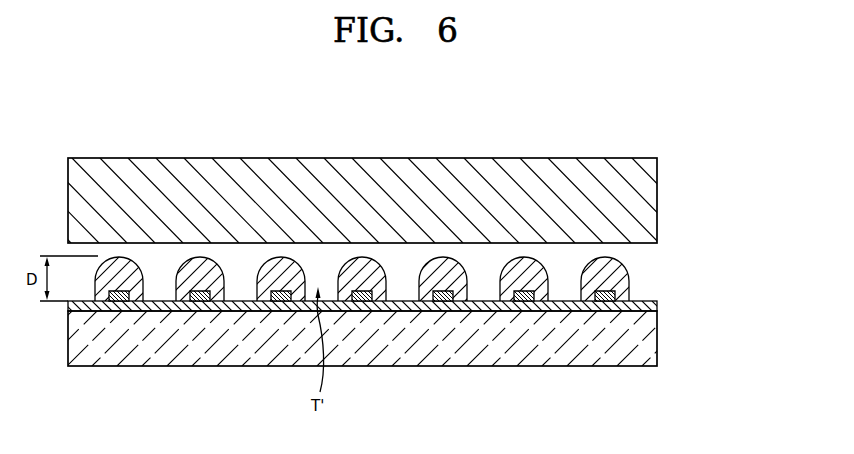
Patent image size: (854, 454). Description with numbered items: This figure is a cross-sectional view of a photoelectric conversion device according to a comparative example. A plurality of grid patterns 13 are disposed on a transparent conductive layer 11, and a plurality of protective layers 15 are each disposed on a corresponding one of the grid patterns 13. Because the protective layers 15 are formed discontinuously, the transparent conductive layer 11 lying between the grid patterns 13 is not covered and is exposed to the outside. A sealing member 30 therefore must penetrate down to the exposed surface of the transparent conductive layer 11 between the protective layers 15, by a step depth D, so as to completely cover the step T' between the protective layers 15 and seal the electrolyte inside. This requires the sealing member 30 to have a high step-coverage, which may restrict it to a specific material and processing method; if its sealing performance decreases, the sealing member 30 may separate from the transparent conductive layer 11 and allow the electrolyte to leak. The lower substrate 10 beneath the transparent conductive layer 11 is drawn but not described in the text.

The substrate 10 is at (650, 339).
The transparent conductive layer 11 is at (650, 309).
The grid patterns 13 is at (616, 299).
The protective layers 15 is at (622, 279).
The sealing member 30 is at (647, 201).